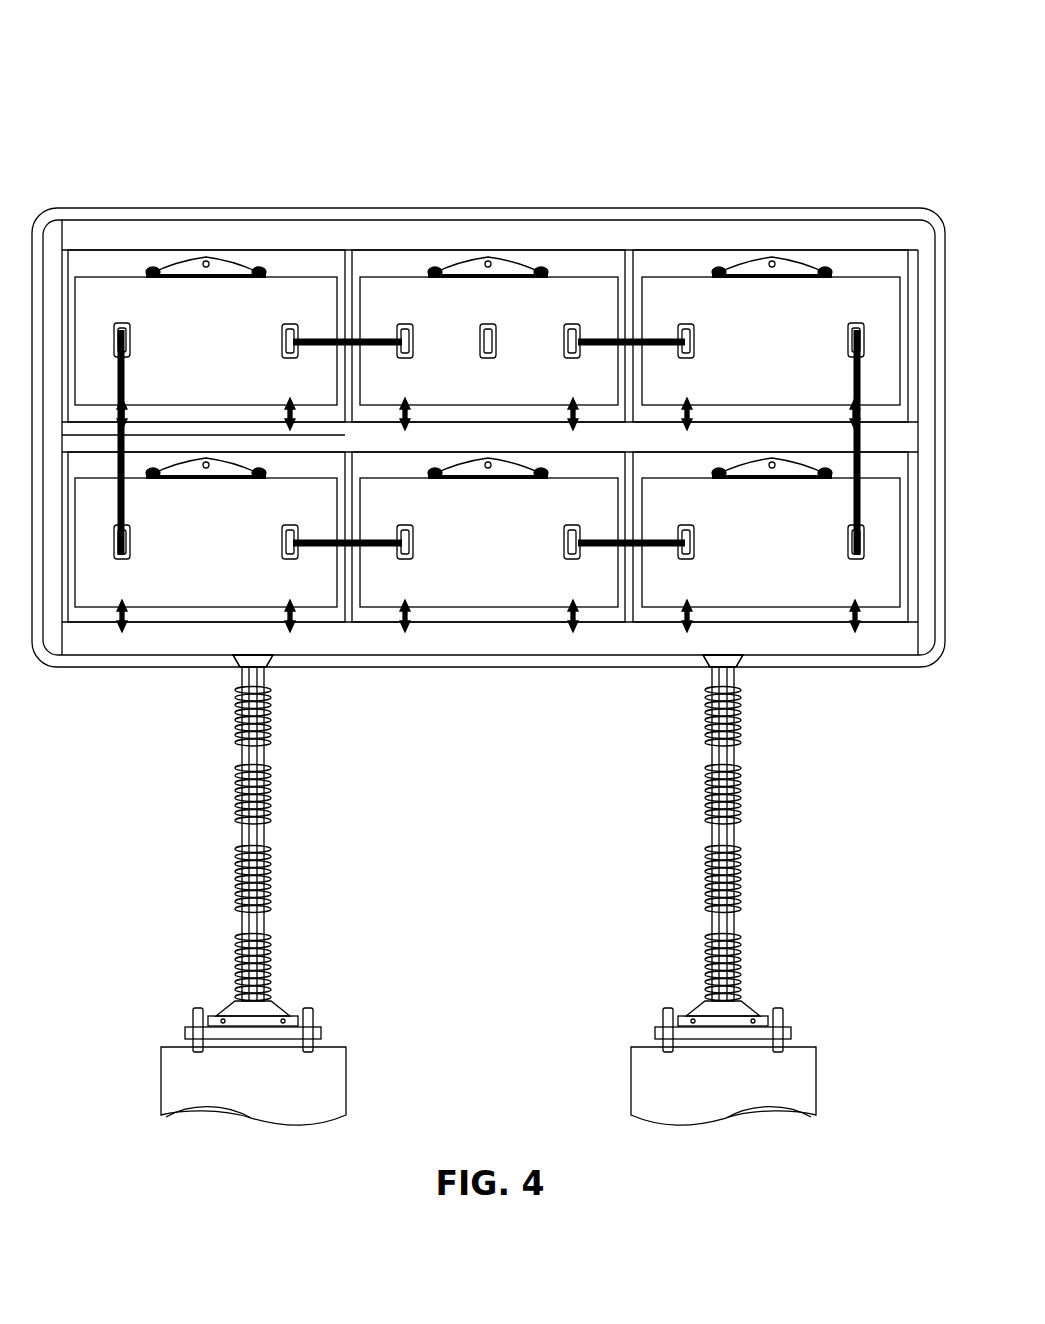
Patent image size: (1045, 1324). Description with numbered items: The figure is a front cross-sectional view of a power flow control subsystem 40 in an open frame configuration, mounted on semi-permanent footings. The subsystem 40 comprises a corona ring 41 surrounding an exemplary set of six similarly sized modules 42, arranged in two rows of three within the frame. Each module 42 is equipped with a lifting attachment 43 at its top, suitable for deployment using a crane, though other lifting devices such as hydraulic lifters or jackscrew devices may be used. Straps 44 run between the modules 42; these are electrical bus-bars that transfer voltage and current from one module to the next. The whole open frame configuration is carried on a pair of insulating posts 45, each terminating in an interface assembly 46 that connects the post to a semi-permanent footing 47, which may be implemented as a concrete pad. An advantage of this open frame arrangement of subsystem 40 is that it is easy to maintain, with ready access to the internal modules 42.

The power flow control subsystem 40 is at (272, 108).
The corona ring 41 is at (407, 208).
The modules 42 is at (855, 302).
The lifting attachment 43 is at (772, 264).
The straps 44 is at (620, 547).
The insulating posts 45 is at (270, 872).
The interface assembly 46 is at (317, 1025).
The semi-permanent footing 47 is at (318, 1102).